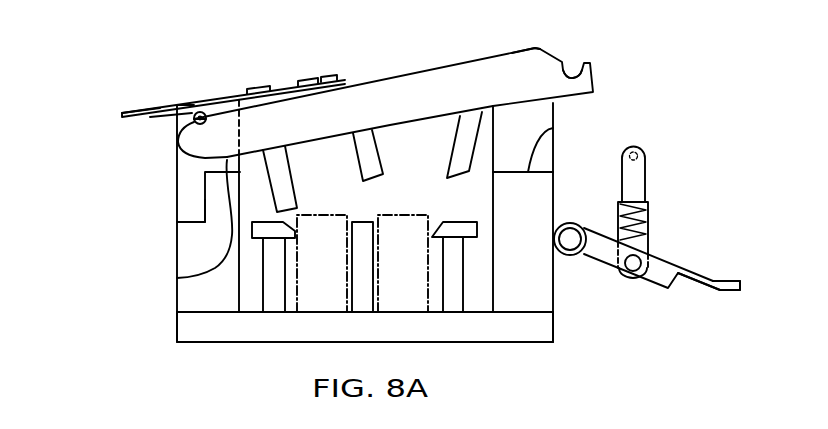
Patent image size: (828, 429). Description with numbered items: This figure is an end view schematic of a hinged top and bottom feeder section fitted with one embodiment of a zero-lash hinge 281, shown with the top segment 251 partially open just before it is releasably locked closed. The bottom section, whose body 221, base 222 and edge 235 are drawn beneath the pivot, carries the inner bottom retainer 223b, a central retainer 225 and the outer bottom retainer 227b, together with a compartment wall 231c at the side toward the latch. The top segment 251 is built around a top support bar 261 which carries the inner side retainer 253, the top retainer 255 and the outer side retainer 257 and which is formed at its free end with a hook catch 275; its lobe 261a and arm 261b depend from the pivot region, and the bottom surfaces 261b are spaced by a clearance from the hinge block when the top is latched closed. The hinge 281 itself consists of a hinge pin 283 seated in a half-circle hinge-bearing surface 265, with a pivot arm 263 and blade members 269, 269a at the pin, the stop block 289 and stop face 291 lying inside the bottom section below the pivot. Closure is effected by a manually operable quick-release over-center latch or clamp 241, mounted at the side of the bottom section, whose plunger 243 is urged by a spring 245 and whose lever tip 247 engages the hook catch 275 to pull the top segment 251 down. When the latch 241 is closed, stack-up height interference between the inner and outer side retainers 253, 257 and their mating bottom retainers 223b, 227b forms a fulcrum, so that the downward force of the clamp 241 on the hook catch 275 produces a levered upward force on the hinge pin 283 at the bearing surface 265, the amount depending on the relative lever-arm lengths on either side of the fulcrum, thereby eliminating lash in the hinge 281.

The switch housing 221 is at (562, 297).
The housing base edge 222 is at (549, 342).
The first terminal 223b is at (280, 277).
The center terminal 225 is at (363, 268).
The second terminal 227b is at (460, 257).
The compartment wall 231c is at (553, 129).
The base plate 235 is at (327, 300).
The quick-release over-center latch or clamp 241 is at (665, 251).
The plunger 243 is at (641, 147).
The compression spring 245 is at (644, 187).
The lever tip 247 is at (697, 285).
The top segment 251 is at (516, 46).
The inner side retainer 253 is at (284, 166).
The top retainer 255 is at (377, 171).
The outer side retainer 257 is at (450, 143).
The top support bar 261 is at (362, 84).
The rocker plate lobe 261a is at (187, 168).
The bottom surface 261b is at (195, 276).
The pivot arm 263 is at (180, 123).
The half-circle hinge-bearing surface 265 is at (206, 126).
The contact blade lower member 269 is at (160, 118).
The contact blade upper member 269a is at (152, 113).
The hook catch 275 is at (592, 74).
The hinge 281 is at (226, 92).
The hinge pin 283 is at (195, 113).
The stop block 289 is at (188, 200).
The stop face 291 is at (203, 211).